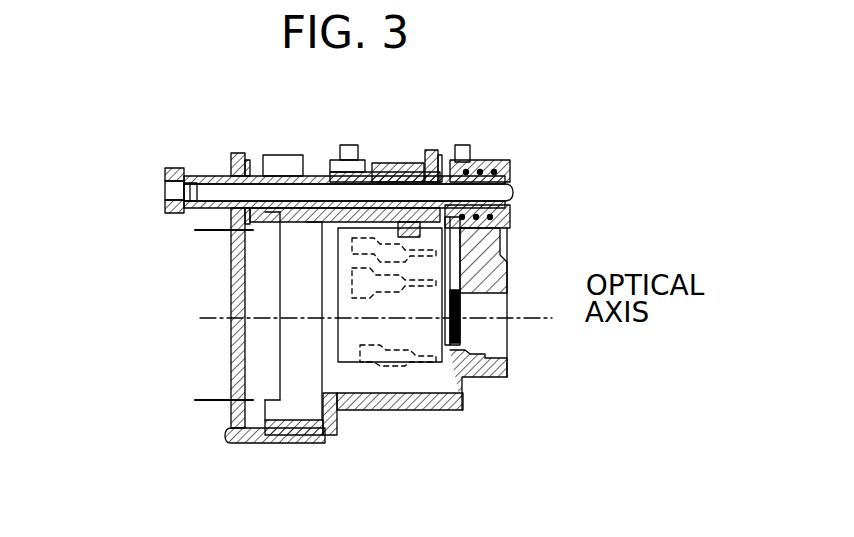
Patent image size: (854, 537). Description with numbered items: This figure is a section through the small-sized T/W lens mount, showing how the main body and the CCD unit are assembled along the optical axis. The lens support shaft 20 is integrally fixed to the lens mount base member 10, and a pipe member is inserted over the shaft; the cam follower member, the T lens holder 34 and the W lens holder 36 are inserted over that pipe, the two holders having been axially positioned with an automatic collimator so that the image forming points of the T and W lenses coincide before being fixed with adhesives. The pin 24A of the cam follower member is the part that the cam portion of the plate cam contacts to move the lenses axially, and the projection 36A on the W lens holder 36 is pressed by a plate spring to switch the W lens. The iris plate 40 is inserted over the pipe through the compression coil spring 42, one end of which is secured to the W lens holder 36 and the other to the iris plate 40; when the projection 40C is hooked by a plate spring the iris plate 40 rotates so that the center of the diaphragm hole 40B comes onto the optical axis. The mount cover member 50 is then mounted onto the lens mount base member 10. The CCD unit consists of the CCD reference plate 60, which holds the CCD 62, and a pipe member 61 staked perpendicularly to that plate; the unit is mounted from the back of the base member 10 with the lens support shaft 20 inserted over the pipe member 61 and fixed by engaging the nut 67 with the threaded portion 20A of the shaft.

The lens mount base member 10 is at (372, 412).
The lens support shaft 20 is at (514, 195).
The threaded portion 20A is at (165, 192).
The pin 24A is at (345, 145).
The T lens holder 34 is at (505, 250).
The W lens holder 36 is at (415, 362).
The projection 36A is at (431, 150).
The iris plate 40 is at (508, 158).
The diaphragm hole 40B is at (470, 318).
The projection 40C is at (462, 145).
The compression coil spring 42 is at (500, 160).
The mount cover member 50 is at (490, 380).
The CCD reference plate 60 is at (245, 153).
The pipe member 61 is at (211, 176).
The CCD 62 is at (283, 383).
The nut 67 is at (175, 214).